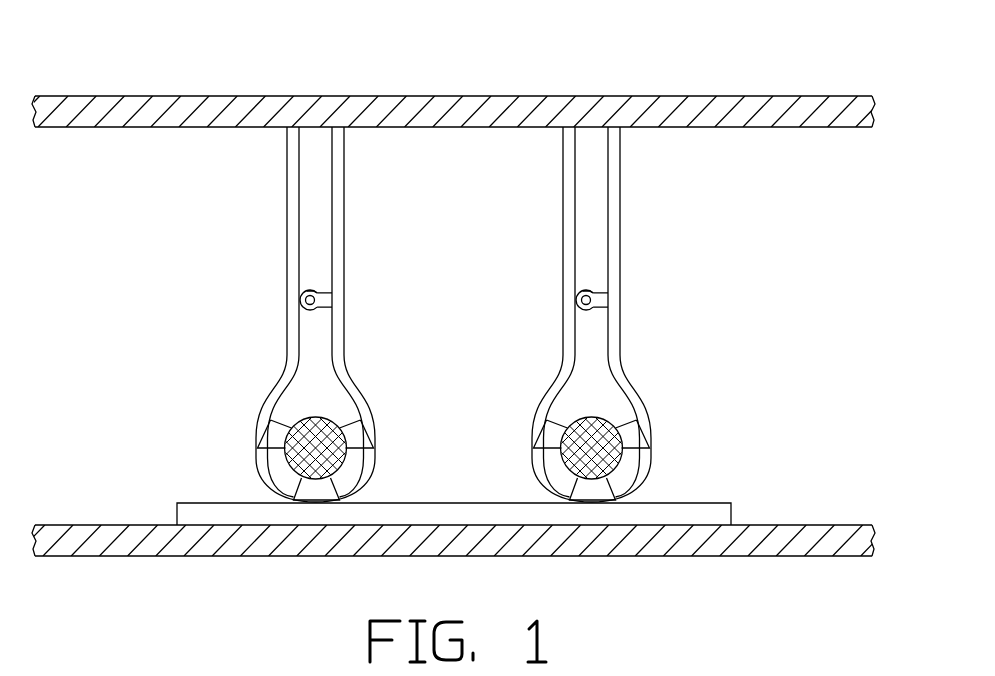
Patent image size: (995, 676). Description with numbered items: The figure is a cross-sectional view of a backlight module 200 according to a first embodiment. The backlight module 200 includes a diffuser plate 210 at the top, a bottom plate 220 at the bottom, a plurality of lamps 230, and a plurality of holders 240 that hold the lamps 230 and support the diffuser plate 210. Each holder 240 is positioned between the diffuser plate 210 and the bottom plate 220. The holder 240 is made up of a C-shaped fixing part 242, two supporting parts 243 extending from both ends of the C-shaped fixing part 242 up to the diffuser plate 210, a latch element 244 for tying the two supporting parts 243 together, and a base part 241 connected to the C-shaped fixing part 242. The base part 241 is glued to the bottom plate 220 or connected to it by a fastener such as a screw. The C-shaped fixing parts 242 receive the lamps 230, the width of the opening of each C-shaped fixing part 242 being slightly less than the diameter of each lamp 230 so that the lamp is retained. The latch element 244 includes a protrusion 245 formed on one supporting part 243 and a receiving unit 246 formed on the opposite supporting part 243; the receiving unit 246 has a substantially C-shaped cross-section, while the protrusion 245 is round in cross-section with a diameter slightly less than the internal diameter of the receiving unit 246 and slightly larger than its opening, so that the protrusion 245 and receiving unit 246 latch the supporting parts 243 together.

The backlight module 200 is at (460, 36).
The diffuser plate 210 is at (813, 112).
The bottom plate 220 is at (820, 538).
The lamp 230 is at (590, 430).
The holder 240 is at (632, 178).
The base part 241 is at (706, 512).
The C-shaped fixing part 242 is at (648, 464).
The supporting part 243 is at (620, 213).
The latch element 244 is at (728, 243).
The protrusion 245 is at (592, 300).
The receiving unit 246 is at (583, 285).